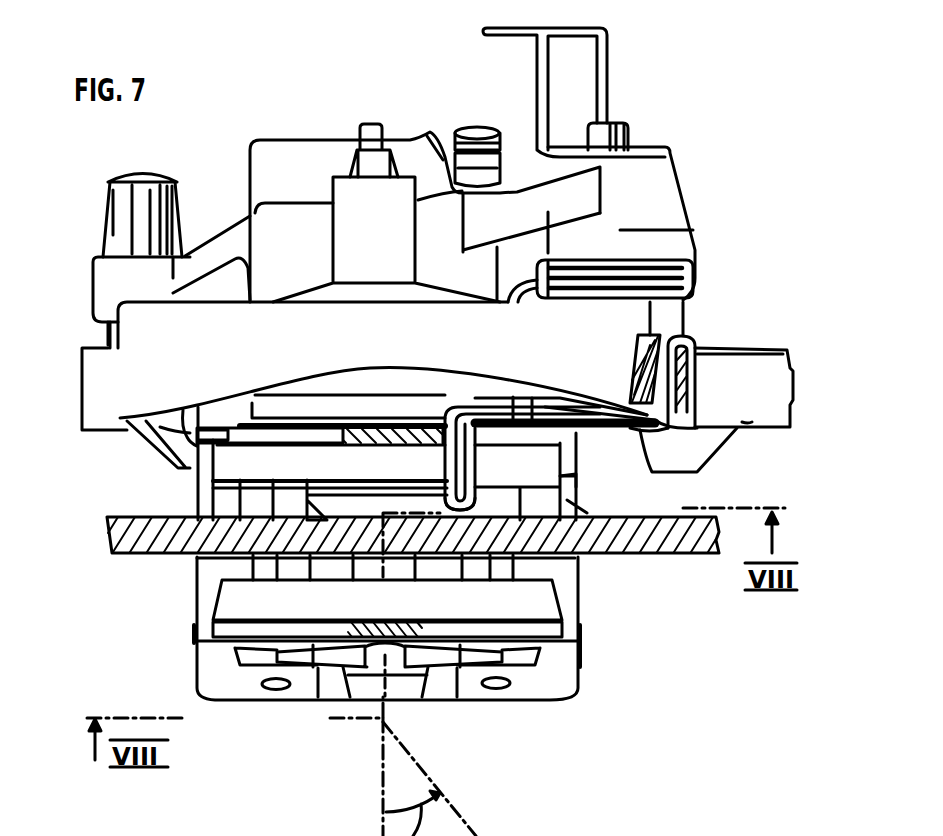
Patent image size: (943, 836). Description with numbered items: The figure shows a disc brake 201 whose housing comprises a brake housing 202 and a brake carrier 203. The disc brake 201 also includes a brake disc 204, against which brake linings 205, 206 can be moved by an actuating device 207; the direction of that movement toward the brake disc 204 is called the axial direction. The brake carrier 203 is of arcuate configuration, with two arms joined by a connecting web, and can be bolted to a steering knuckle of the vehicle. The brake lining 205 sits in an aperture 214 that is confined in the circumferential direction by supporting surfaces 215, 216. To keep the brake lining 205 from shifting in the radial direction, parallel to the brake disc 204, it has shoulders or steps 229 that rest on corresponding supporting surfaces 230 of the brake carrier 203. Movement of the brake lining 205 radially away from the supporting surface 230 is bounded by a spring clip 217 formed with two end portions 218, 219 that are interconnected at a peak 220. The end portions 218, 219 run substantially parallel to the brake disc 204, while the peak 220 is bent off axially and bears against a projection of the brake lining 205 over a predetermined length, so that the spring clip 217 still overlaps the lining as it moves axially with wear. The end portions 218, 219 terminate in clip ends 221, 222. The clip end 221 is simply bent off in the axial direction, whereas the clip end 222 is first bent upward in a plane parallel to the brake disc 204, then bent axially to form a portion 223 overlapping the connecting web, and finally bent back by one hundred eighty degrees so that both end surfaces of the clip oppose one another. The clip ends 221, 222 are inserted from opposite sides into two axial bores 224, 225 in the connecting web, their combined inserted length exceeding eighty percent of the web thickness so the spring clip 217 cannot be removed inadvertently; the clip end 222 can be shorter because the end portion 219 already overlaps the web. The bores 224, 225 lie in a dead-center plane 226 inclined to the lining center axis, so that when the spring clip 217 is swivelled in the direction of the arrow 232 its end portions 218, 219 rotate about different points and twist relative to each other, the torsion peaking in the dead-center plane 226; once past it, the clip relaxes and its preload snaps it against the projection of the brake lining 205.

The disc brake 201 is at (281, 136).
The brake housing 202 is at (563, 598).
The brake carrier 203 is at (118, 338).
The brake disc 204 is at (651, 552).
The brake lining 205 is at (233, 473).
The brake lining 206 is at (227, 607).
The actuating device 207 is at (315, 400).
The aperture 214 is at (580, 475).
The supporting surface 215 is at (582, 444).
The supporting surface 216 is at (180, 475).
The spring clip 217 is at (703, 385).
The end portion 218 is at (468, 403).
The end portion 219 is at (522, 403).
The peak 220 is at (487, 481).
The clip end 221 is at (630, 383).
The clip end 222 is at (693, 337).
The portion 223 is at (713, 445).
The bore 224 is at (641, 344).
The bore 225 is at (637, 436).
The dead-center plane 226 is at (495, 835).
The shoulders or steps 229 is at (177, 430).
The supporting surface 230 is at (200, 410).
The arrow 232 is at (637, 830).